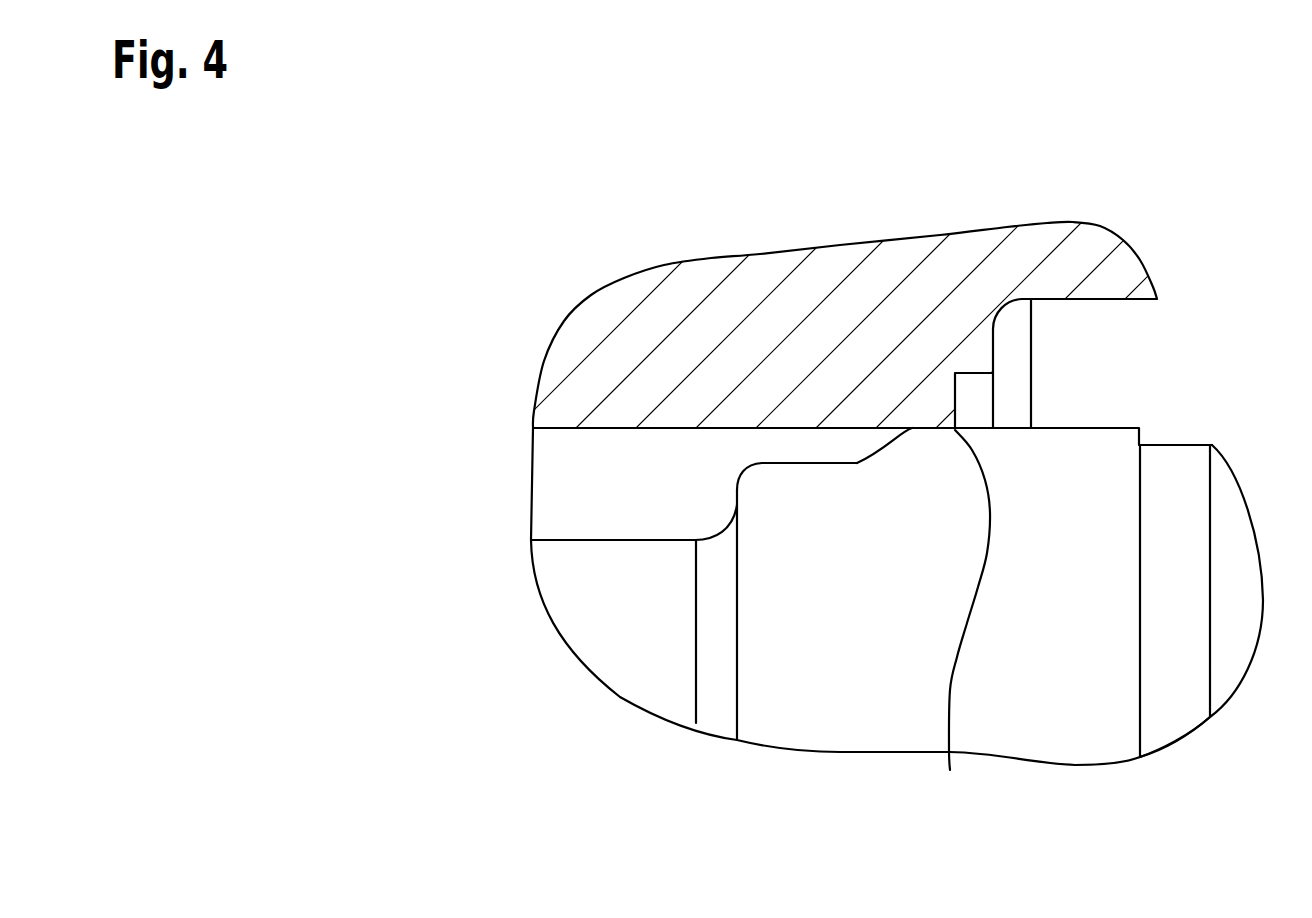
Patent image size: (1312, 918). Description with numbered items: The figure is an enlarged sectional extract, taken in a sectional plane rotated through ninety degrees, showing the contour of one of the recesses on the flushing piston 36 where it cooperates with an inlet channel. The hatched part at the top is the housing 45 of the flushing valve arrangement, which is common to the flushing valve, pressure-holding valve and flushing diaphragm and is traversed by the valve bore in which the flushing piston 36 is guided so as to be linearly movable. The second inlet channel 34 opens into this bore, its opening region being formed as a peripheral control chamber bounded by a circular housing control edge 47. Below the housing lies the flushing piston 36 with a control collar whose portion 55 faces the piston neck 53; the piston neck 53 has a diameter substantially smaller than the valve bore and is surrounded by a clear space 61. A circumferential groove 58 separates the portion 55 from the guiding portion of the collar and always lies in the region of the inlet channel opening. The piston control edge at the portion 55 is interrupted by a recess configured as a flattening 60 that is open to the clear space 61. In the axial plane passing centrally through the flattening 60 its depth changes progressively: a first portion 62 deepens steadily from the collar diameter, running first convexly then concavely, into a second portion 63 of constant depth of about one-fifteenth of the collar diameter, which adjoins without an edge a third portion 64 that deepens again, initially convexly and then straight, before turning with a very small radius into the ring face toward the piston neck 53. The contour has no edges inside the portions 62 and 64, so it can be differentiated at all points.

The second inlet channel 34 is at (1118, 342).
The flushing piston 36 is at (1162, 427).
The housing 45 is at (1088, 252).
The housing control edge 47 is at (950, 770).
The piston neck 53 is at (580, 630).
The portion 55 is at (838, 733).
The circumferential groove 58 is at (1175, 728).
The flattening 60 is at (817, 463).
The clear space 61 is at (555, 470).
The first portion 62 is at (893, 433).
The second portion 63 is at (827, 463).
The third portion 64 is at (760, 470).